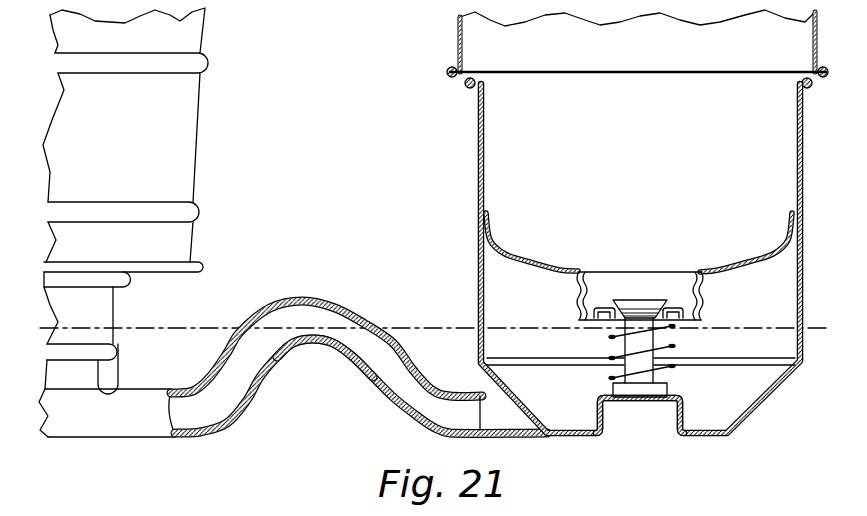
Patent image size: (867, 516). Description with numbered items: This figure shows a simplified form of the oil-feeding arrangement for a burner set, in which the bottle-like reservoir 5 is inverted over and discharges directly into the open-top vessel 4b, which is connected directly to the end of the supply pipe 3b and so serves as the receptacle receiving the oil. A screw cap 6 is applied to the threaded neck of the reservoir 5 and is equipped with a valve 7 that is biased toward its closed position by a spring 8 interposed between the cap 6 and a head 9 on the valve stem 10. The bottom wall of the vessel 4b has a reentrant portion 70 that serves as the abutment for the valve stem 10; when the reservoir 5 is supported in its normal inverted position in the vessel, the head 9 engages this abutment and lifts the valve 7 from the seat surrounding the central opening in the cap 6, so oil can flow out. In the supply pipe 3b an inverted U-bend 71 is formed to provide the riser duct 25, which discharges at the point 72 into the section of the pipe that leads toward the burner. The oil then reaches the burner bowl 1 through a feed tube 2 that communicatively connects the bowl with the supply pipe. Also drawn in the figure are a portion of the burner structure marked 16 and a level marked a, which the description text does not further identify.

The vessel 16 is at (125, 147).
The burner bowl 1 is at (115, 316).
The feed tube 2 is at (119, 363).
The supply pipe 3b is at (163, 425).
The inverted U-bend 71 is at (316, 297).
The discharge point 72 is at (322, 336).
The riser duct 25 is at (370, 357).
The vessel 4b is at (477, 218).
The reservoir 5 is at (637, 82).
The valve 7 is at (640, 300).
The screw cap 6 is at (702, 300).
The spring 8 is at (607, 328).
The valve stem 10 is at (645, 357).
The liquid level a is at (780, 330).
The head 9 is at (668, 390).
The reentrant portion 70 is at (676, 421).